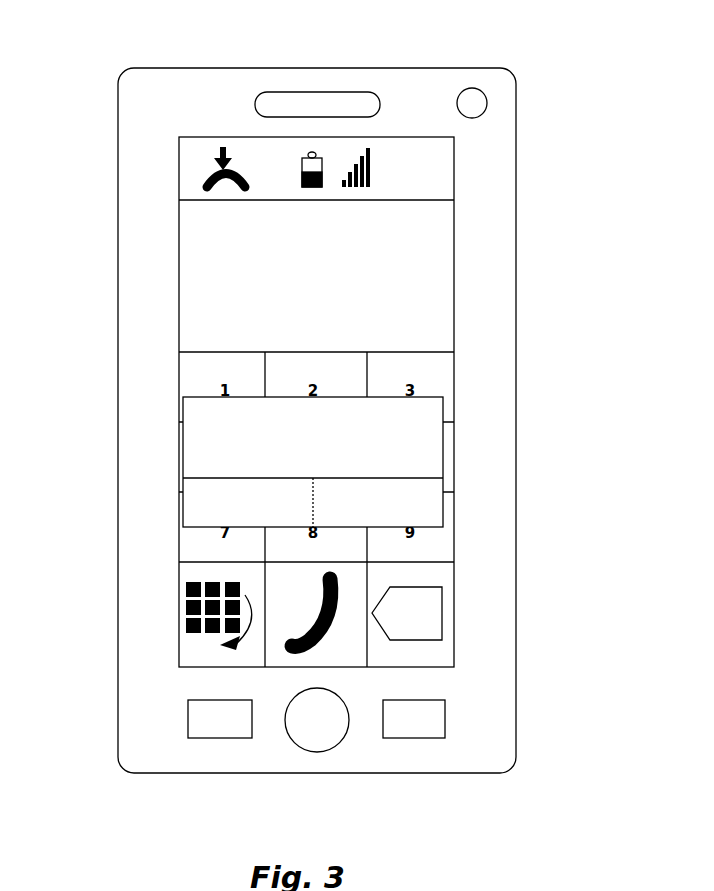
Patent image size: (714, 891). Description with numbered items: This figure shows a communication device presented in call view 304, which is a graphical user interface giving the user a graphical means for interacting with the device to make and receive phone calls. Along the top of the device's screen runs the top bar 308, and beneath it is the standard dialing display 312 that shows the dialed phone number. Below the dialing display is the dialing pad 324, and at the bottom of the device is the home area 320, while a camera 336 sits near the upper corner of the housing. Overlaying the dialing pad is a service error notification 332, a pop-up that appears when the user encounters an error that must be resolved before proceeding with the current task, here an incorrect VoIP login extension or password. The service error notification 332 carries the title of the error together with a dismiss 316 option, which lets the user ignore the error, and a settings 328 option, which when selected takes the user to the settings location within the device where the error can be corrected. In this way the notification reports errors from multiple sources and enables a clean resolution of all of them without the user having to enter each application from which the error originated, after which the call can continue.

The call view 304 is at (316, 68).
The top bar 308 is at (246, 160).
The standard dialing display 312 is at (210, 262).
The dismiss option 316 is at (192, 500).
The home area 320 is at (188, 718).
The dialing pad 324 is at (440, 579).
The settings option 328 is at (420, 507).
The service error notification 332 is at (443, 447).
The camera 336 is at (459, 105).